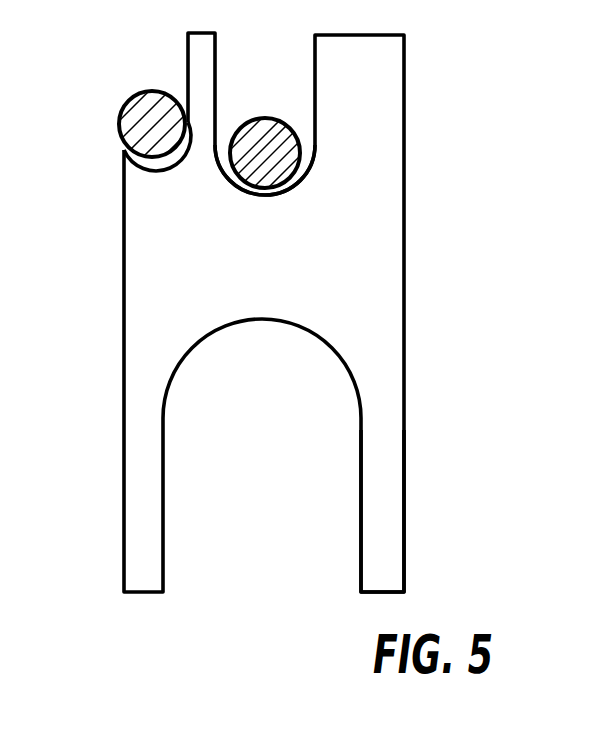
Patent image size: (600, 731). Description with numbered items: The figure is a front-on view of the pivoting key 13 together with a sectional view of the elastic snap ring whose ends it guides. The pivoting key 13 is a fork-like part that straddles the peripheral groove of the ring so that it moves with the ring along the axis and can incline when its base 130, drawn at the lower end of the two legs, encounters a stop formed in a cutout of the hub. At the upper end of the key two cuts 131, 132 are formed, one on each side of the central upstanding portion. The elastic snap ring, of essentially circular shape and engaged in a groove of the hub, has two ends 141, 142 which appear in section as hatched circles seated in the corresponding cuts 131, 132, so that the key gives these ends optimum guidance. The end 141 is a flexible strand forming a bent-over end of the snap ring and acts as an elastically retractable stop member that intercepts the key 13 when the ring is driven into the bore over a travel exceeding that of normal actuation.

The pivoting key 13 is at (308, 287).
The base 130 is at (380, 555).
The cut 131 is at (308, 165).
The cut 132 is at (171, 156).
The elastically retractable stop member 141 is at (270, 143).
The end of the snap ring 142 is at (148, 120).